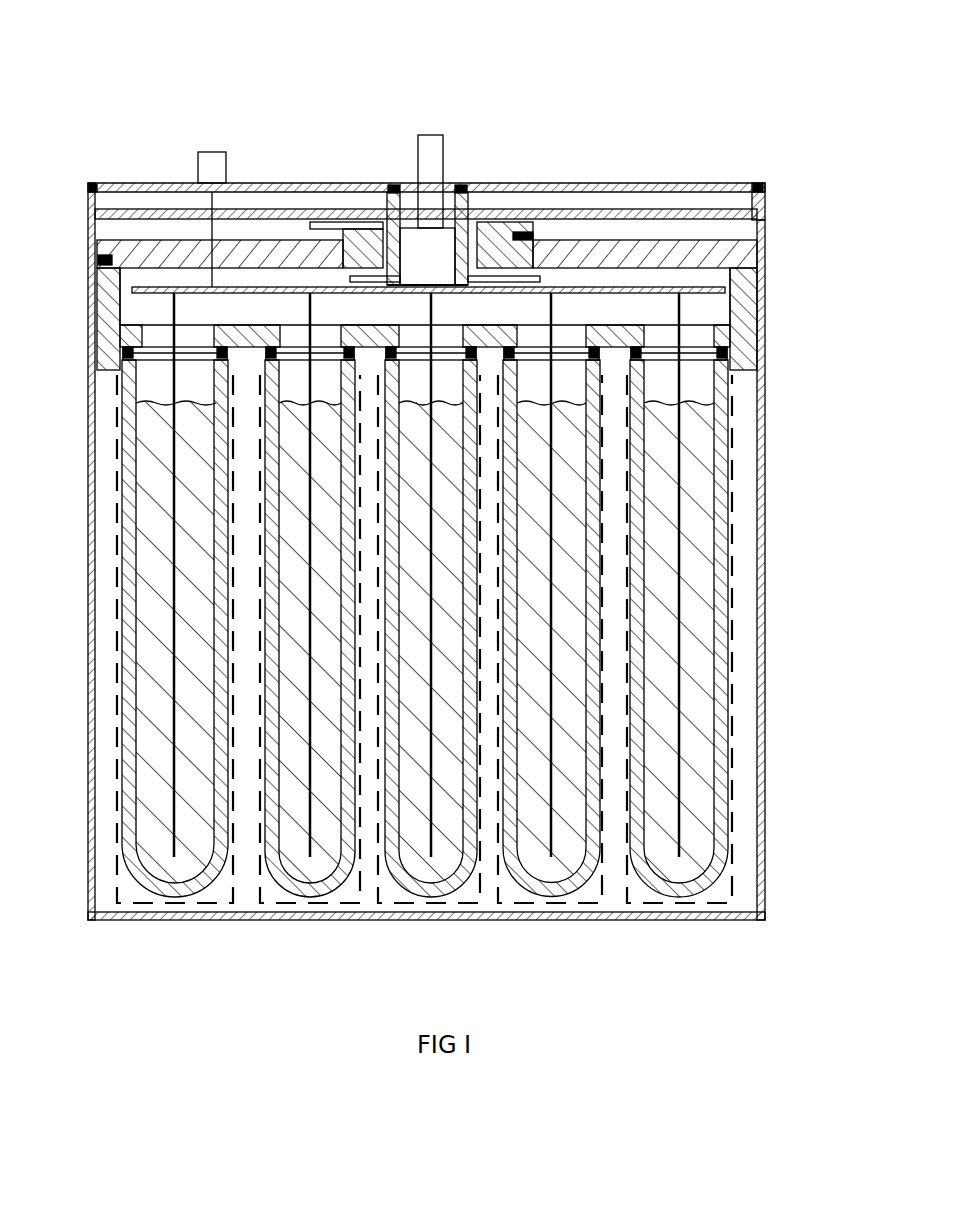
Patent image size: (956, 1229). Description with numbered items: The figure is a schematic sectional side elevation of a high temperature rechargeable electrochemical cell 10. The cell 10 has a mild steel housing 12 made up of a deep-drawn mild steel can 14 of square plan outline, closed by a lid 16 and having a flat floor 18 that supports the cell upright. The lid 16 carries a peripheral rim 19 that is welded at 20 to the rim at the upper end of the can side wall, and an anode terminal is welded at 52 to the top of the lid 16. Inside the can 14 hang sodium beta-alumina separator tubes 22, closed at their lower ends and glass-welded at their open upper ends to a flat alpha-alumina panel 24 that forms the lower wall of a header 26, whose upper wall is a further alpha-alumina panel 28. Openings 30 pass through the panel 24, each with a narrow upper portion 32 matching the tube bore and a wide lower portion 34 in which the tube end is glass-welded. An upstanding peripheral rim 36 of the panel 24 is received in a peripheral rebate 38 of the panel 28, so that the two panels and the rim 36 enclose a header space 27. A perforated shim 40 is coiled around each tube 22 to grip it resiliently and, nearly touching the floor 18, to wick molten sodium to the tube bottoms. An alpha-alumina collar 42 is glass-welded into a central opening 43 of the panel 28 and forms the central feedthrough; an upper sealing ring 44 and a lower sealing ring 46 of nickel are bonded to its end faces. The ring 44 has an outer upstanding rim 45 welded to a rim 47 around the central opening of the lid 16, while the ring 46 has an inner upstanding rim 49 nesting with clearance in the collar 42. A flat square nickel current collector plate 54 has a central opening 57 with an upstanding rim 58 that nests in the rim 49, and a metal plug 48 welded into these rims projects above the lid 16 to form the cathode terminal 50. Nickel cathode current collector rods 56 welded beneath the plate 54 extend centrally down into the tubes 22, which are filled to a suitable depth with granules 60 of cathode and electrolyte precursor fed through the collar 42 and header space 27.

The high temperature rechargeable electrochemical cell 10 is at (672, 77).
The mild steel housing 12 is at (762, 128).
The deep-drawn mild steel can 14 is at (765, 493).
The lid 16 is at (580, 240).
The flat floor 18 is at (468, 920).
The peripheral rim 19 is at (657, 200).
The weld 20 is at (97, 181).
The sodium beta-alumina separator tubes 22 is at (130, 787).
The alpha-alumina panel 24 is at (567, 345).
The header 26 is at (693, 217).
The header space 27 is at (702, 313).
The alpha-alumina panel 28 is at (262, 240).
The openings 30 is at (290, 318).
The narrow upper portion 32 is at (603, 338).
The wide lower portion 34 is at (353, 357).
The upstanding peripheral rim 36 is at (108, 300).
The peripheral rebate 38 is at (134, 255).
The perforated shim 40 is at (603, 683).
The alpha-alumina collar 42 is at (375, 245).
The central opening 43 is at (535, 234).
The upper sealing ring 44 is at (500, 218).
The outer peripheral upstanding rim 45 is at (393, 185).
The lower sealing ring 46 is at (555, 262).
The rim 47 is at (330, 222).
The metal plug 48 is at (435, 208).
The inner peripheral upstanding rim 49 is at (433, 225).
The cathode terminal 50 is at (440, 140).
The anode terminal weld 52 is at (212, 152).
The current collector plate 54 is at (228, 283).
The cathode current collector rods 56 is at (310, 413).
The central opening 57 is at (450, 300).
The upstanding rim 58 is at (443, 280).
The granules 60 is at (290, 633).